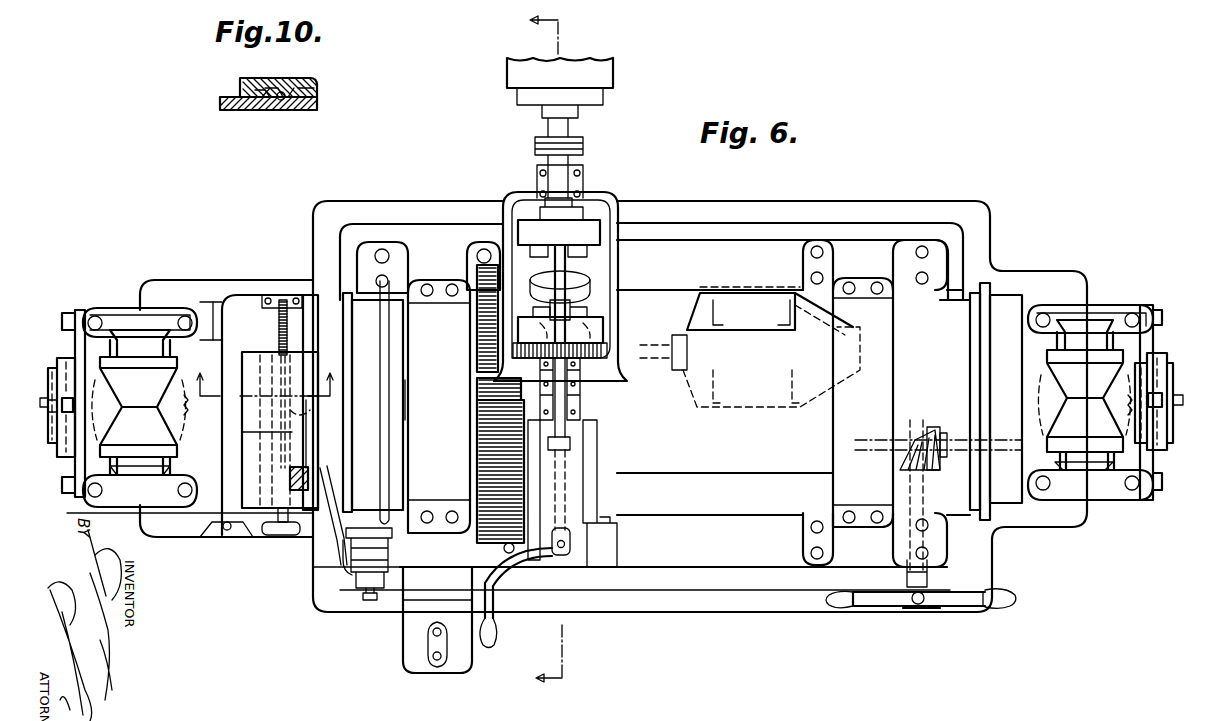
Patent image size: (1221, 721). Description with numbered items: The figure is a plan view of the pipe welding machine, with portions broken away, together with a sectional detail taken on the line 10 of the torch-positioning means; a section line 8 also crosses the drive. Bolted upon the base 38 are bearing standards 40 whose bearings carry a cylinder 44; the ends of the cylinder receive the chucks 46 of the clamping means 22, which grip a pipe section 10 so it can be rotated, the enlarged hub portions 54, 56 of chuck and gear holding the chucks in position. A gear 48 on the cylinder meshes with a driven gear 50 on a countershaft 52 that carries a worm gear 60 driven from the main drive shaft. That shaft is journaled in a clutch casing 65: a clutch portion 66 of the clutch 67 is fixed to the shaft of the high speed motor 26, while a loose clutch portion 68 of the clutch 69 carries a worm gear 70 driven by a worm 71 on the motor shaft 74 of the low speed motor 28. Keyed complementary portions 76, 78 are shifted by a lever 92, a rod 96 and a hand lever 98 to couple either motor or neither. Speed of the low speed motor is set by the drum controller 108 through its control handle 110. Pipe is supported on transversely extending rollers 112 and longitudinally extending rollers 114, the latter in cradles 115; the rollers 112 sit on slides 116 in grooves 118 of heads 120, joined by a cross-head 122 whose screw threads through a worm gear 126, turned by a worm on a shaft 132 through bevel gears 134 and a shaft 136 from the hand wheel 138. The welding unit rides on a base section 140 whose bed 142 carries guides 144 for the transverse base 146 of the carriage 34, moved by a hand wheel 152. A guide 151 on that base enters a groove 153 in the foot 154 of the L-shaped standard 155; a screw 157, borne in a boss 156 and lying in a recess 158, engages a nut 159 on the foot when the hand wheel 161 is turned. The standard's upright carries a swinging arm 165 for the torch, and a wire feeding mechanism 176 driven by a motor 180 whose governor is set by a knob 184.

In FIG. 6, the section line 8- 8 is at (530, 350).
In FIG. 6, the pipe section 10 is at (266, 373).
In FIG. 6, the clamping means 22 is at (687, 402).
In FIG. 6, the high speed motor 26 is at (612, 71).
In FIG. 6, the low speed motor 28 is at (771, 347).
In FIG. 10, the carriage 34 is at (214, 103).
In FIG. 6, the carriage 34 is at (222, 422).
In FIG. 6, the base 38 is at (689, 614).
In FIG. 6, the bearing standard 40 is at (650, 405).
In FIG. 6, the cylinder 44 is at (665, 462).
In FIG. 6, the chuck 46 is at (1015, 292).
In FIG. 6, the gear 48 is at (476, 448).
In FIG. 6, the driven gear 50 is at (476, 355).
In FIG. 6, the countershaft 52 is at (582, 412).
In FIG. 6, the enlarged hub portion 54 is at (408, 392).
In FIG. 6, the enlarged hub portion 56 is at (476, 412).
In FIG. 6, the worm gear 60 is at (571, 446).
In FIG. 6, the clutch casing 65 is at (590, 392).
In FIG. 6, the clutch portion 66 is at (559, 221).
In FIG. 6, the clutch 67 is at (536, 257).
In FIG. 6, the clutch portion 68 is at (604, 327).
In FIG. 6, the clutch 69 is at (585, 312).
In FIG. 6, the worm gear 70 is at (583, 329).
In FIG. 6, the worm 71 is at (534, 329).
In FIG. 6, the motor shaft 74 is at (676, 372).
In FIG. 6, the complementary clutch portion 76 is at (580, 256).
In FIG. 6, the complementary clutch portion 78 is at (535, 307).
In FIG. 6, the lever 92 is at (590, 280).
In FIG. 6, the rod 96 is at (560, 498).
In FIG. 6, the hand lever 98 is at (493, 633).
In FIG. 6, the drum controller 108 is at (402, 657).
In FIG. 6, the control handle 110 is at (447, 655).
In FIG. 6, the transversely extending roller 112 is at (611, 397).
In FIG. 6, the longitudinally extending roller 114 is at (50, 365).
In FIG. 6, the cradle 115 is at (55, 415).
In FIG. 6, the slide 116 is at (611, 338).
In FIG. 6, the groove 118 is at (172, 313).
In FIG. 6, the head 120 is at (110, 310).
In FIG. 6, the cross-head 122 is at (180, 425).
In FIG. 6, the worm gear 126 is at (115, 434).
In FIG. 6, the shaft 132 is at (885, 440).
In FIG. 6, the bevel gears 134 is at (915, 440).
In FIG. 6, the shaft 136 is at (906, 543).
In FIG. 6, the hand wheel 138 is at (865, 607).
In FIG. 6, the base section 140 is at (217, 540).
In FIG. 6, the bed 142 is at (225, 297).
In FIG. 6, the guide 144 is at (200, 297).
In FIG. 6, the transverse base 146 is at (290, 268).
In FIG. 10, the guide 151 is at (293, 88).
In FIG. 6, the guide 151 is at (262, 324).
In FIG. 6, the hand wheel 152 is at (265, 537).
In FIG. 10, the groove 153 is at (244, 92).
In FIG. 10, the foot 154 is at (316, 92).
In FIG. 6, the foot 154 is at (242, 400).
In FIG. 6, the L-shaped standard 155 is at (310, 440).
In FIG. 6, the boss 156 is at (305, 297).
In FIG. 10, the screw 157 is at (273, 100).
In FIG. 6, the screw 157 is at (290, 330).
In FIG. 10, the recess 158 is at (284, 100).
In FIG. 6, the recess 158 is at (278, 340).
In FIG. 10, the nut 159 is at (292, 100).
In FIG. 6, the nut 159 is at (312, 415).
In FIG. 6, the hand wheel 161 is at (290, 523).
In FIG. 6, the arm 165 is at (308, 470).
In FIG. 6, the wire feeding mechanism 176 is at (335, 545).
In FIG. 6, the motor 180 is at (393, 550).
In FIG. 6, the knob 184 is at (370, 602).